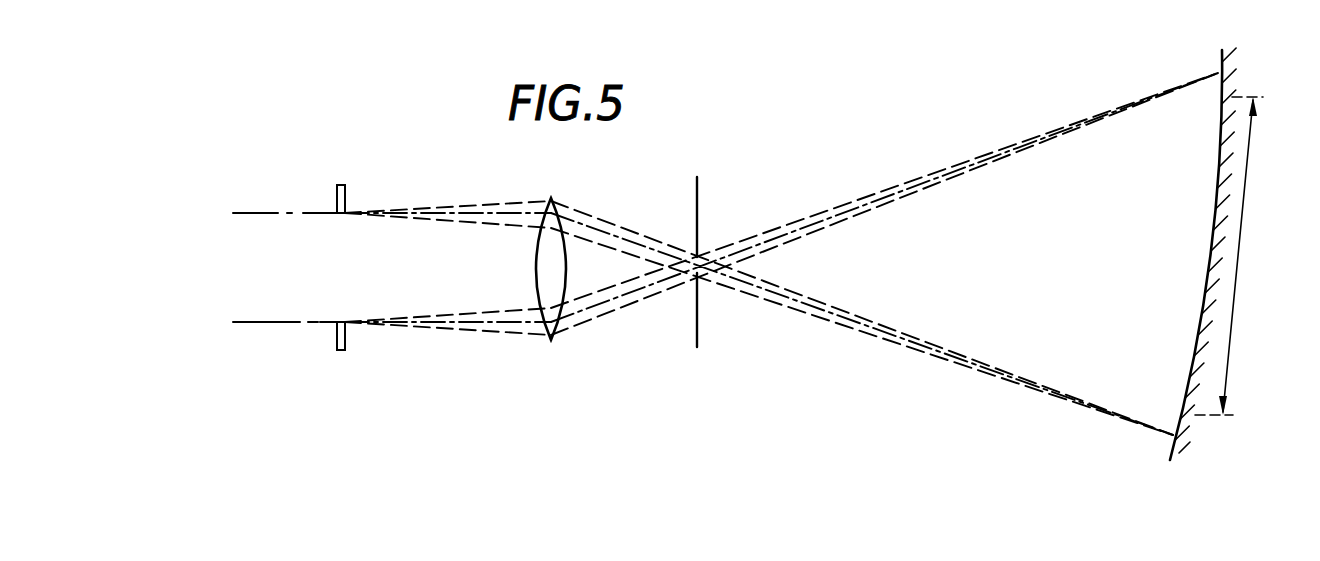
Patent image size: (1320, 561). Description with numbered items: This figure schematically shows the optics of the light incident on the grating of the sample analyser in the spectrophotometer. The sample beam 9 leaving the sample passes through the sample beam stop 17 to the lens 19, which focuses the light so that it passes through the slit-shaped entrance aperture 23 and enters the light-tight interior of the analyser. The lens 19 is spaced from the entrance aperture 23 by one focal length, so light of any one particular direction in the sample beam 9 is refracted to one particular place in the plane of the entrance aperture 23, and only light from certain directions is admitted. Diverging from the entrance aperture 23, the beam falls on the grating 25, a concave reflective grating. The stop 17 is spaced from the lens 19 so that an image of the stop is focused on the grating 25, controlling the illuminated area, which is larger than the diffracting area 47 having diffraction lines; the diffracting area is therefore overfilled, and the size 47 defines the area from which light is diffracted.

The sample beam 9 is at (266, 213).
The sample beam stop 17 is at (346, 205).
The lens 19 is at (554, 241).
The entrance aperture 23 is at (703, 283).
The grating 25 is at (1168, 446).
The diffracting area of the grating 47 is at (1240, 265).